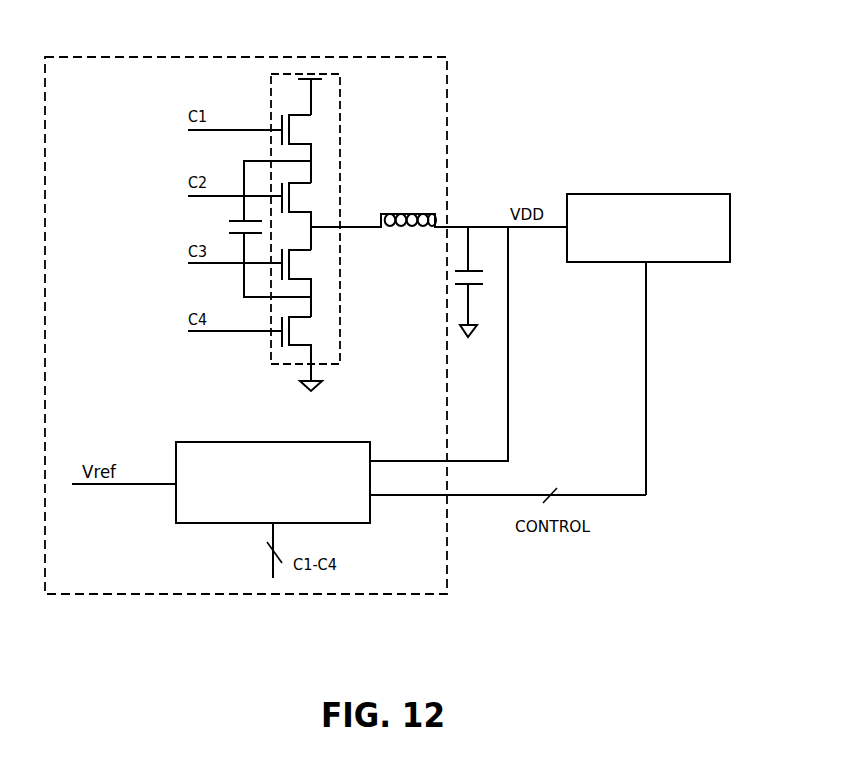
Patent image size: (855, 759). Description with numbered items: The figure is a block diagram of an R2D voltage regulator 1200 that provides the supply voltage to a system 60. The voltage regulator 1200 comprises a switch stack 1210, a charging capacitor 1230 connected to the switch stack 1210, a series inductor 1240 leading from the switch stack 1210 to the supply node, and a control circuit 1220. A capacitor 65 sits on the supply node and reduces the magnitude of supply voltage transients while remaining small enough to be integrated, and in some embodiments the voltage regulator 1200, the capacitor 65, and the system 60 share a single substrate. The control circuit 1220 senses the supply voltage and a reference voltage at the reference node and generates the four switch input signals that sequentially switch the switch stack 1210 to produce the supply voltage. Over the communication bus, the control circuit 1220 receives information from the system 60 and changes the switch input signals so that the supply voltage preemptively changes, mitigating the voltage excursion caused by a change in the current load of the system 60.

The R2D voltage regulator 1200 is at (153, 57).
The switch stack 1210 is at (341, 110).
The control circuit 1220 is at (326, 442).
The charging capacitor 1230 is at (228, 222).
The series inductor 1240 is at (404, 232).
The system 60 is at (685, 263).
The capacitor 65 is at (483, 277).